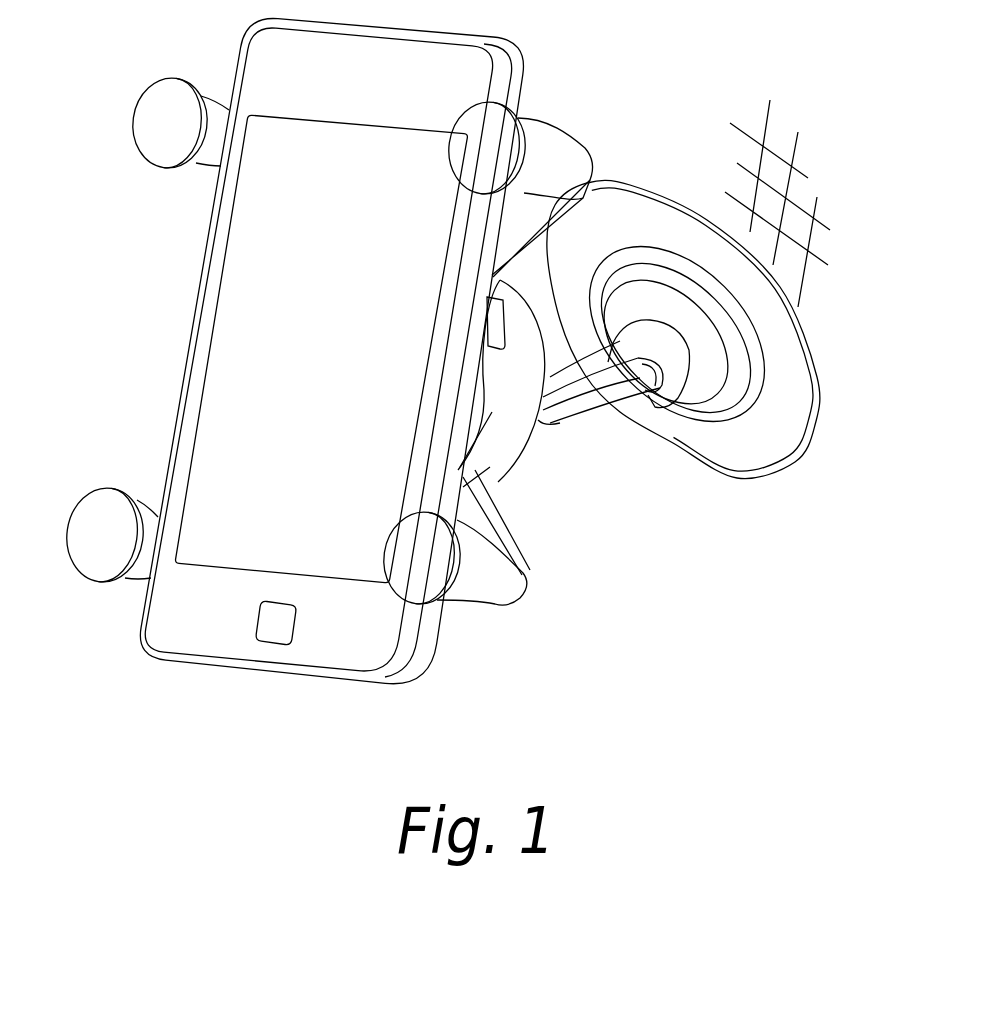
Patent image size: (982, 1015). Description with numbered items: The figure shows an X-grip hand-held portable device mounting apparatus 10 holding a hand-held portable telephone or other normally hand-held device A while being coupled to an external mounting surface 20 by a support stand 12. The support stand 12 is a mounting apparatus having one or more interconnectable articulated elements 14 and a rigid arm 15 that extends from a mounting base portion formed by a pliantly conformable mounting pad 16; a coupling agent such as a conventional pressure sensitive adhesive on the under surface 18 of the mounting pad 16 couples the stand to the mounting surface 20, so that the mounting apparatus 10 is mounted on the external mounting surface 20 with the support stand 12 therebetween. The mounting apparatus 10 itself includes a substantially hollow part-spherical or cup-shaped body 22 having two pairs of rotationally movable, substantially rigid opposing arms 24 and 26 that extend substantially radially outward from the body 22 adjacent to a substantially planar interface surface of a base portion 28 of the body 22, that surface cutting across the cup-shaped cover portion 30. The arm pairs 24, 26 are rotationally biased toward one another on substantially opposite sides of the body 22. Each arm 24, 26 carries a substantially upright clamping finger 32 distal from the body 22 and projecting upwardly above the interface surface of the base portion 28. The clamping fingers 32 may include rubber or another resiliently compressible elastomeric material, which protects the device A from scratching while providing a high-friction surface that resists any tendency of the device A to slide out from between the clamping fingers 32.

The hand-held device A is at (422, 32).
The X-grip hand-held portable device mounting apparatus 10 is at (650, 313).
The support stand 12 is at (622, 423).
The interconnectable articulated elements 14 is at (540, 415).
The rigid arm 15 is at (595, 400).
The pliantly conformable mounting pad 16 is at (775, 468).
The under surface 18 is at (800, 338).
The external mounting surface 20 is at (730, 173).
The body 22 is at (527, 447).
The opposing arms 24 is at (547, 203).
The opposing arms 26 is at (490, 538).
The base portion 28 is at (482, 383).
The cover portion 30 is at (538, 410).
The clamping fingers 32 is at (183, 138).